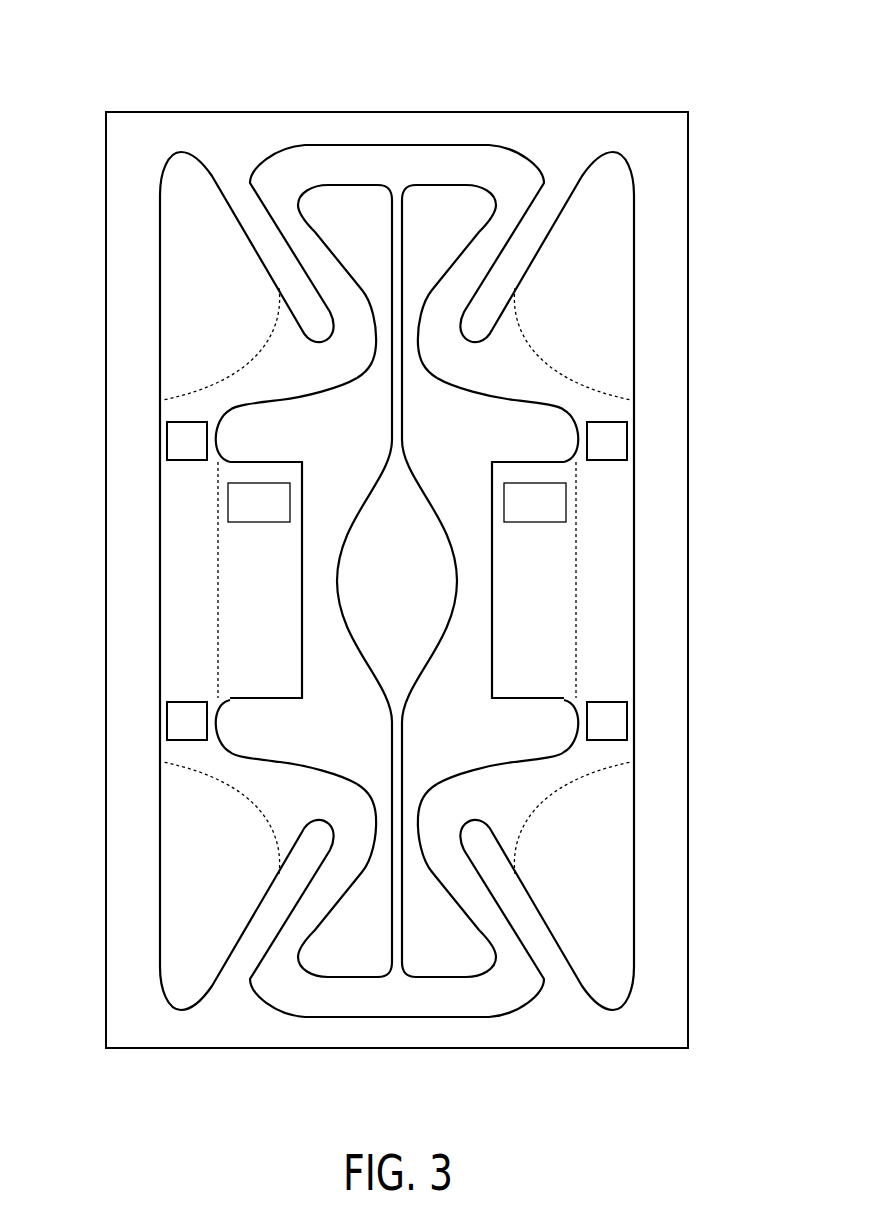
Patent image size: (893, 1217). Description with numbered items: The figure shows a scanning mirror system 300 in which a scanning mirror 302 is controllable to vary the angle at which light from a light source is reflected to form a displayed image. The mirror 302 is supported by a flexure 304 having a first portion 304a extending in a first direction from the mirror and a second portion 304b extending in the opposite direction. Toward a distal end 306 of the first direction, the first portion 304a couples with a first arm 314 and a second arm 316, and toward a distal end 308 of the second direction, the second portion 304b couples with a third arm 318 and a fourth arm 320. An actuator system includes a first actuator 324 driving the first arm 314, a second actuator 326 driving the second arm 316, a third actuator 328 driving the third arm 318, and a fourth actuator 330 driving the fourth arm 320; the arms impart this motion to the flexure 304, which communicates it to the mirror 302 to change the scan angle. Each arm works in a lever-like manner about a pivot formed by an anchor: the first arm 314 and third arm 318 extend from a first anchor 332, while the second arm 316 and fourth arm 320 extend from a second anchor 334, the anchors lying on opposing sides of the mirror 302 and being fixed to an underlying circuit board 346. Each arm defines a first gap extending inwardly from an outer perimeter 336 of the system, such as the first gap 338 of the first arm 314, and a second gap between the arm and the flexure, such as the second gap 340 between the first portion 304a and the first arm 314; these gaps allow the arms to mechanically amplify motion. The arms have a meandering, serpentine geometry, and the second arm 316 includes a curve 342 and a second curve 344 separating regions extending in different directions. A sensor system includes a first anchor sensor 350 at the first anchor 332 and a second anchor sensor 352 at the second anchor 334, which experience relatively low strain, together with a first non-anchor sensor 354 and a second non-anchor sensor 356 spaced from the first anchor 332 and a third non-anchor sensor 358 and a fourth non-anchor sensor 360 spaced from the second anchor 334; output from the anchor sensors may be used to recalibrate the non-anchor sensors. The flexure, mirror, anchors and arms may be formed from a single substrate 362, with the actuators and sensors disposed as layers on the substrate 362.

The scanning mirror system 300 is at (400, 40).
The scanning mirror 302 is at (413, 592).
The flexure 304 is at (394, 581).
The first portion 304a is at (404, 254).
The second portion 304b is at (404, 900).
The distal end 306 is at (370, 218).
The distal end 308 is at (370, 948).
The first arm 314 is at (547, 390).
The second arm 316 is at (237, 398).
The third arm 318 is at (545, 775).
The fourth arm 320 is at (250, 775).
The first actuator 324 is at (595, 309).
The second actuator 326 is at (233, 309).
The third actuator 328 is at (595, 867).
The fourth actuator 330 is at (233, 867).
The first anchor 332 is at (548, 662).
The second anchor 334 is at (276, 662).
The outer perimeter 336 is at (634, 595).
The first gap 338 is at (562, 163).
The second gap 340 is at (413, 386).
The curve 342 is at (379, 377).
The second curve 344 is at (239, 174).
The circuit board 346 is at (122, 153).
The first anchor sensor 350 is at (551, 515).
The second anchor sensor 352 is at (275, 515).
The first non-anchor sensor 354 is at (628, 440).
The second non-anchor sensor 356 is at (628, 714).
The third non-anchor sensor 358 is at (166, 440).
The fourth non-anchor sensor 360 is at (166, 718).
The substrate 362 is at (634, 957).